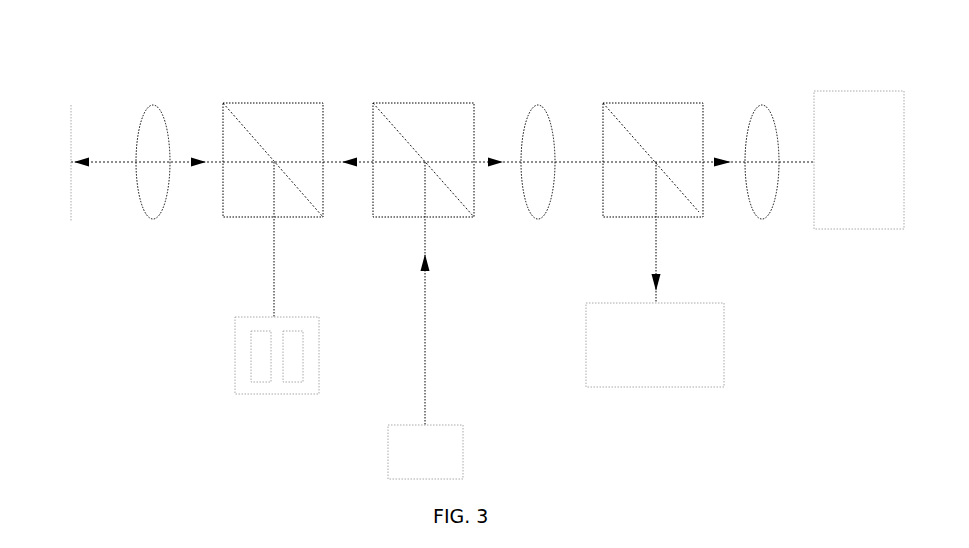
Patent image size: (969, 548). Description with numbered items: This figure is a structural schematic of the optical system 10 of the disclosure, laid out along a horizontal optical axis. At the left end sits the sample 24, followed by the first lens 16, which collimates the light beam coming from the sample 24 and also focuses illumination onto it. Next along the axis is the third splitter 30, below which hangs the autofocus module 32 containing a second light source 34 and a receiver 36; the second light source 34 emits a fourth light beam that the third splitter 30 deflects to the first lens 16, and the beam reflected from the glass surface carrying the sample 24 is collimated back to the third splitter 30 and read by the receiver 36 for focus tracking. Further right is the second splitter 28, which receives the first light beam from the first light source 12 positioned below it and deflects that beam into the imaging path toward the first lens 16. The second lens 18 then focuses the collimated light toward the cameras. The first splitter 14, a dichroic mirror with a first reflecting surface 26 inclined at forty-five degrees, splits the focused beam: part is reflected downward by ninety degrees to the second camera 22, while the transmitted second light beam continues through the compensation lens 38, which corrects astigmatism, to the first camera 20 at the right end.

The optical system 10 is at (140, 38).
The first light source 12 is at (388, 440).
The first splitter 14 is at (600, 118).
The first lens 16 is at (145, 122).
The second lens 18 is at (527, 133).
The first camera 20 is at (820, 106).
The second camera 22 is at (590, 322).
The sample 24 is at (70, 117).
The first reflecting surface 26 is at (630, 128).
The second splitter 28 is at (377, 126).
The third splitter 30 is at (225, 118).
The autofocus module 32 is at (234, 337).
The second light source 34 is at (295, 385).
The receiver 36 is at (259, 385).
The compensation lens 38 is at (752, 117).